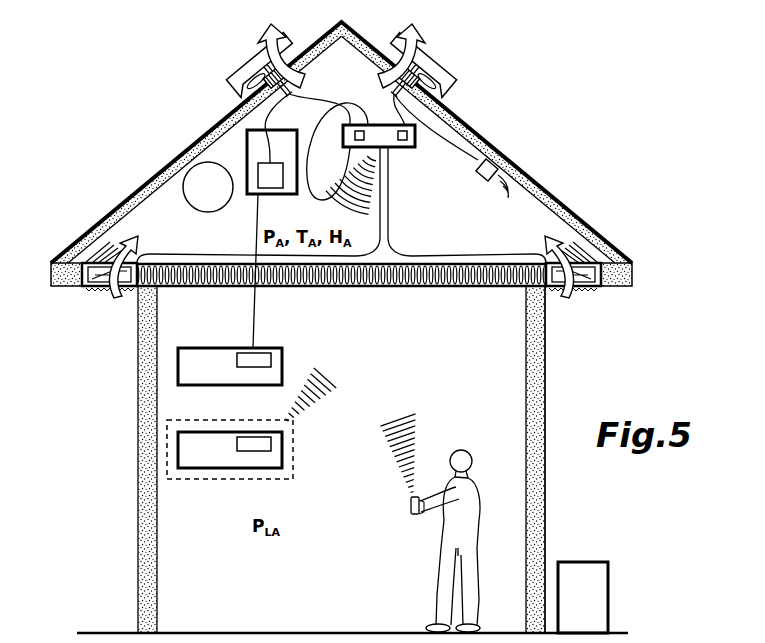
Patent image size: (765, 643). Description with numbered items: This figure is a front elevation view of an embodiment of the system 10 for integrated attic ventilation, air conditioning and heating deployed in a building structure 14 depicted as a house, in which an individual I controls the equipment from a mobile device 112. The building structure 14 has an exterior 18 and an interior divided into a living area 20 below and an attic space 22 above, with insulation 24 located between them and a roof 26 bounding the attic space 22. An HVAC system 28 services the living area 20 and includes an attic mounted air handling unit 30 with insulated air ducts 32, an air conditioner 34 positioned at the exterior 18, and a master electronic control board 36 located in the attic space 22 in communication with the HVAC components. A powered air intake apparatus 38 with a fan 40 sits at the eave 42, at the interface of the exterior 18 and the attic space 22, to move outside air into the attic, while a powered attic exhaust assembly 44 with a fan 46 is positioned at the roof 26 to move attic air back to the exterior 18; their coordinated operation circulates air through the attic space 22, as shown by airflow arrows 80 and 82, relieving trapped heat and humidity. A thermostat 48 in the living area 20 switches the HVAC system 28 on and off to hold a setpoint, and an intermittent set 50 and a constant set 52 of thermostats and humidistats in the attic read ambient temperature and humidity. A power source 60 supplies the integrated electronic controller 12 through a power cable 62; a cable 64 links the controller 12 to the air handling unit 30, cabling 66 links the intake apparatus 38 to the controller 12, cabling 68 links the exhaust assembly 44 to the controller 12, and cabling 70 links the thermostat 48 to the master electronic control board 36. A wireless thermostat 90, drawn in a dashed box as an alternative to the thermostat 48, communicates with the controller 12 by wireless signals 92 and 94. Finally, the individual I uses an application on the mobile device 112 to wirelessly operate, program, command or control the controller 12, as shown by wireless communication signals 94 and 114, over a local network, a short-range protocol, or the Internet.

The system 10 is at (341, 316).
The integrated electronic controller 12 is at (398, 150).
The building structure 14 is at (549, 400).
The exterior 18 is at (546, 476).
The living area 20 is at (336, 632).
The attic space 22 is at (537, 205).
The insulation 24 is at (432, 288).
The roof 26 is at (341, 142).
The HVAC system 28 is at (240, 140).
The air handling unit 30 is at (281, 178).
The insulated air ducts 32 is at (190, 205).
The air conditioner 34 is at (586, 562).
The master electronic control board 36 is at (261, 185).
The powered air intake apparatus 38 is at (98, 298).
The fan 40 is at (88, 258).
The eave 42 is at (68, 290).
The powered attic exhaust assembly 44 is at (247, 58).
The fan 46 is at (232, 88).
The thermostat 48 is at (283, 366).
The intermittent set 50 is at (337, 151).
The constant set 52 is at (403, 153).
The power source 60 is at (484, 183).
The power cable 62 is at (458, 152).
The cable 64 is at (333, 103).
The cabling 66 is at (433, 254).
The cabling 68 is at (286, 98).
The cabling 70 is at (255, 322).
The airflow arrow 80 is at (113, 209).
The airflow arrow 82 is at (270, 28).
The wireless thermostat 90 is at (283, 448).
The wireless signal 92 is at (312, 400).
The wireless signal 94 is at (362, 230).
The mobile device 112 is at (410, 506).
The wireless communication signal 114 is at (395, 420).
The individual I is at (467, 452).